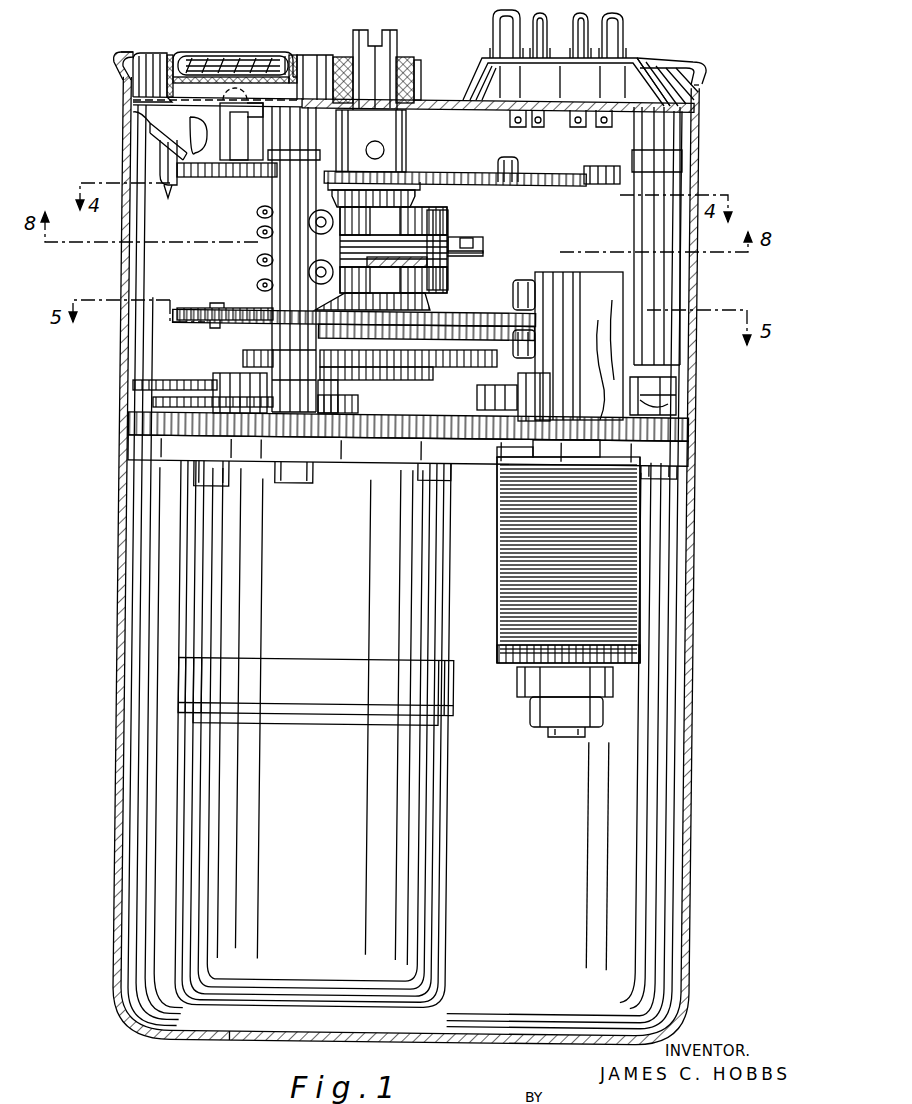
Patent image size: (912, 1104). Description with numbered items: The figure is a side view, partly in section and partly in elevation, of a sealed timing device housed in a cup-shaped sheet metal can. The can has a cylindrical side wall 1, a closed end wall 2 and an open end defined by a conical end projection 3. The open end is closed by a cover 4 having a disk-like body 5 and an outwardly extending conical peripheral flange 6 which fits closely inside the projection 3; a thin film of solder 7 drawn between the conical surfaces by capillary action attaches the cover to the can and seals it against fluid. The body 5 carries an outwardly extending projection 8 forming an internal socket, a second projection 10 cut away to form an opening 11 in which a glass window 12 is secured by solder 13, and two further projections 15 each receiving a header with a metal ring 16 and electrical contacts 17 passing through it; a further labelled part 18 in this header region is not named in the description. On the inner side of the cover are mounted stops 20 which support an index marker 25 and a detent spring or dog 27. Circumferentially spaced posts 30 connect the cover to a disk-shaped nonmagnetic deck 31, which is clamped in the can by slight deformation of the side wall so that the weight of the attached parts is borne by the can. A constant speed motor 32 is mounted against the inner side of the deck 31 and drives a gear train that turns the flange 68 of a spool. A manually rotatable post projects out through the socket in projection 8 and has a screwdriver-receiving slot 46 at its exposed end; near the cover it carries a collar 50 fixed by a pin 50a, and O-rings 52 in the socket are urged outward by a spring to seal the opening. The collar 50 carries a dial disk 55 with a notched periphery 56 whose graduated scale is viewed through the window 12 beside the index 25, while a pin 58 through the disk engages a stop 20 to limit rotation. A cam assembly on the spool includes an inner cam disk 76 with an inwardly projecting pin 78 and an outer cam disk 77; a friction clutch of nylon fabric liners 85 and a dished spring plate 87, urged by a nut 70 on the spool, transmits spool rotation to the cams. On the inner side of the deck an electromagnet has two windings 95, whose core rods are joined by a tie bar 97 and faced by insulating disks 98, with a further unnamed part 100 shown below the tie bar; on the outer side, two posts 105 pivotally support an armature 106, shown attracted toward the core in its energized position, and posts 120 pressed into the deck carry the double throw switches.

The cylindrical side wall 1 is at (118, 574).
The closed end wall 2 is at (238, 1044).
The conical end projection 3 is at (700, 96).
The cover 4 is at (176, 52).
The disk-like body 5 is at (440, 98).
The conical peripheral flange 6 is at (142, 50).
The film of solder 7 is at (125, 118).
The outwardly extending projection 8 is at (342, 57).
The outwardly extending projection 10 is at (292, 52).
The opening 11 is at (246, 57).
The glass window 12 is at (210, 55).
The solder 13 is at (312, 56).
The outwardly extending projections 15 is at (648, 78).
The metal ring 16 is at (628, 62).
The electrical contacts 17 is at (547, 42).
The terminal block 18 is at (480, 70).
The inwardly projecting stop 20 is at (238, 162).
The index marker 25 is at (175, 126).
The detent spring or dog 27 is at (168, 196).
The posts 30 is at (652, 230).
The deck 31 is at (396, 438).
The constant speed motor 32 is at (340, 596).
The screwdriver-receiving slot 46 is at (378, 32).
The collar 50 is at (404, 132).
The pin 50a is at (386, 152).
The O-rings 52 is at (417, 62).
The dial disk 55 is at (540, 172).
The notched periphery 56 is at (210, 178).
The pin 58 is at (506, 164).
The flange 68 is at (244, 356).
The nut 70 is at (420, 202).
The inner cam disk 76 is at (466, 322).
The outer cam disk 77 is at (483, 256).
The pin 78 is at (216, 306).
The fabric liners 85 is at (476, 242).
The dished plate 87 is at (452, 242).
The windings 95 is at (628, 640).
The tie bar 97 is at (532, 698).
The insulating disks 98 is at (520, 446).
The shaft end 100 is at (542, 712).
The posts 105 is at (540, 412).
The armature 106 is at (478, 398).
The posts 120 is at (620, 264).